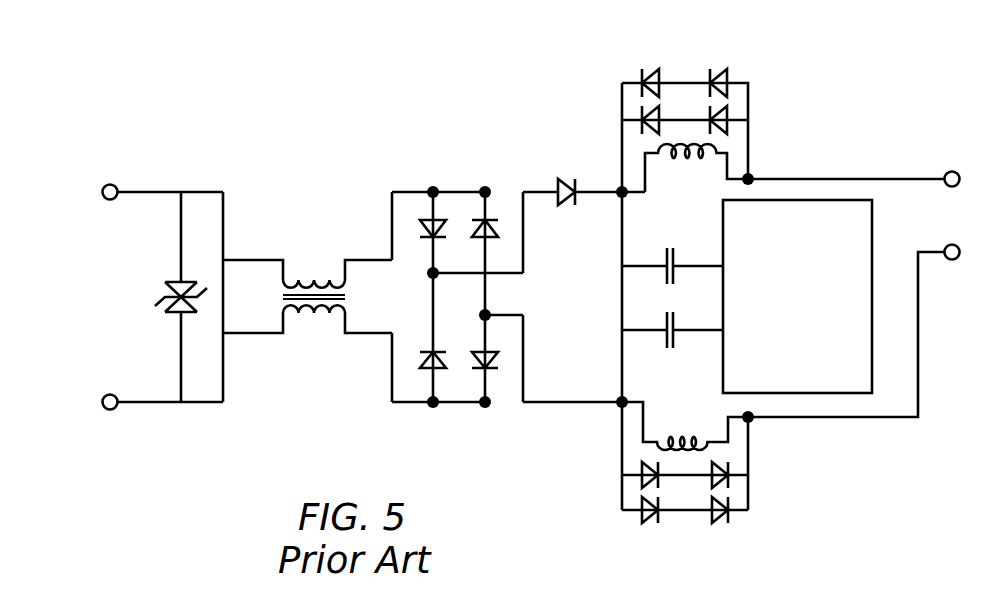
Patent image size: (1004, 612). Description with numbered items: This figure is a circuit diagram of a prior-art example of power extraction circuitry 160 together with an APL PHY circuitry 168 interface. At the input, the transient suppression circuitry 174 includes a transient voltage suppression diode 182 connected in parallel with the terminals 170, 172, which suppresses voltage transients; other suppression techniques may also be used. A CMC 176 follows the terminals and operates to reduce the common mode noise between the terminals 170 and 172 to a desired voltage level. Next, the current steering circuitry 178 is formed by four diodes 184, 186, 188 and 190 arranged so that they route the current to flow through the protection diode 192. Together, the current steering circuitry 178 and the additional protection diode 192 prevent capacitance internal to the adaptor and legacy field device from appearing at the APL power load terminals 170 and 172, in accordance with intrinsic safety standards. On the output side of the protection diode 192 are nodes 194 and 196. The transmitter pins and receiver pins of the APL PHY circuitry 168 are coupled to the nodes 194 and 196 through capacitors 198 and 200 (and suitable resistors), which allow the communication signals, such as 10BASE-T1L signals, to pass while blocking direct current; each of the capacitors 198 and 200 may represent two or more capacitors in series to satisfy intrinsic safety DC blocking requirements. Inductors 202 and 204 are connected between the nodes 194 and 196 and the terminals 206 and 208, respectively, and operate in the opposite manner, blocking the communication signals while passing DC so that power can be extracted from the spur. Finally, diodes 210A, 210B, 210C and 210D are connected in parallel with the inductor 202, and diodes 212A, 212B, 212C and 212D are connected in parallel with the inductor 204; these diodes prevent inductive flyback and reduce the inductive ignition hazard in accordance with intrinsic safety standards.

The power extraction circuitry 160 is at (158, 64).
The APL PHY circuitry 168 is at (853, 310).
The terminal 170 is at (110, 184).
The terminal 172 is at (110, 410).
The transient suppression circuitry 174 is at (126, 313).
The CMC 176 is at (307, 345).
The current steering circuitry 178 is at (410, 144).
The transient voltage suppression diode 182 is at (173, 281).
The diode 184 is at (420, 227).
The diode 186 is at (422, 360).
The diode 188 is at (477, 230).
The diode 190 is at (477, 357).
The protection diode 192 is at (562, 177).
The node 194 is at (618, 188).
The node 196 is at (618, 408).
The capacitor 198 is at (667, 280).
The capacitor 200 is at (667, 327).
The inductor 202 is at (690, 160).
The inductor 204 is at (692, 433).
The terminal 206 is at (952, 168).
The terminal 208 is at (952, 260).
The diode 210A is at (653, 72).
The diode 210B is at (658, 117).
The diode 210C is at (723, 72).
The diode 210D is at (728, 118).
The diode 212A is at (655, 520).
The diode 212B is at (660, 478).
The diode 212C is at (713, 517).
The diode 212D is at (728, 480).